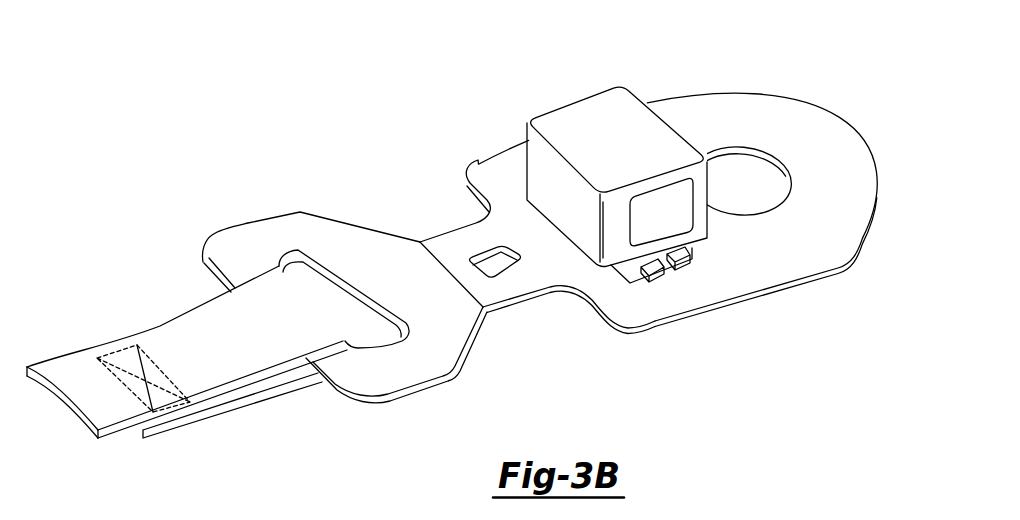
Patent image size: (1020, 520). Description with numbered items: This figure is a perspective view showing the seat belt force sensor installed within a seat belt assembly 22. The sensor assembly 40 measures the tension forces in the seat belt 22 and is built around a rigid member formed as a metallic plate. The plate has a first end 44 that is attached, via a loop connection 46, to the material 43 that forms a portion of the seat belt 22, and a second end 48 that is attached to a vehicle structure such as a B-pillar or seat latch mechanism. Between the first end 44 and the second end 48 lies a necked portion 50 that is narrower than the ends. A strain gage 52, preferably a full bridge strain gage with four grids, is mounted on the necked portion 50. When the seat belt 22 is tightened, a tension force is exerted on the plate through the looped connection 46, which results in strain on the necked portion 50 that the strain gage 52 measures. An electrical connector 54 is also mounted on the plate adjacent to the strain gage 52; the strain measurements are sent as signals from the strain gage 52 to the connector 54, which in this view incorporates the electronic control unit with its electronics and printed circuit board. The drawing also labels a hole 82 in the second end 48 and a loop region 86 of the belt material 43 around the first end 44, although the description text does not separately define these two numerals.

The seat belt assembly 22 is at (103, 322).
The sensor assembly 40 is at (631, 356).
The material 43 is at (232, 375).
The first end 44 is at (243, 266).
The loop connection 46 is at (387, 350).
The second end 48 is at (860, 142).
The necked portion 50 is at (520, 278).
The strain gage 52 is at (491, 262).
The electrical connector 54 is at (590, 136).
The mounting hole 82 is at (743, 180).
The strap loop 86 is at (318, 276).